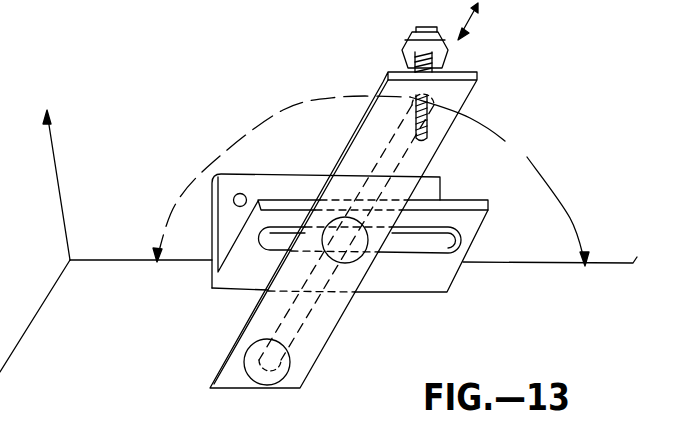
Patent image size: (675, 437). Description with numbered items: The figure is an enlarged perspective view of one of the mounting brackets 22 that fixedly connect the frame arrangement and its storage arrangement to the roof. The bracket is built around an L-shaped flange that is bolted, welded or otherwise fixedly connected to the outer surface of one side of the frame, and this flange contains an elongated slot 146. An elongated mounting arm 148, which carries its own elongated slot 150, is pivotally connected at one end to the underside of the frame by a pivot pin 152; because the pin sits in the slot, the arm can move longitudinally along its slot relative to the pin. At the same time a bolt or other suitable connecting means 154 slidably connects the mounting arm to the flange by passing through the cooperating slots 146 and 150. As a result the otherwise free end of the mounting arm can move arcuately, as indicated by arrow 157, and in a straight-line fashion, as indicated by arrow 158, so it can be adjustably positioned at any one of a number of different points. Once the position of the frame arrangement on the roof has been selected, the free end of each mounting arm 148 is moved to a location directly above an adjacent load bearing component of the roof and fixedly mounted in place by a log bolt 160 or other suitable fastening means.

The mounting bracket 22 is at (209, 341).
The elongated slot 146 is at (428, 237).
The elongated mounting arm 148 is at (307, 357).
The elongated slot 150 is at (306, 305).
The pivot pin 152 is at (268, 386).
The bolt 154 is at (358, 258).
The arrow 157 is at (525, 157).
The arrow 158 is at (476, 18).
The log bolt 160 is at (403, 43).